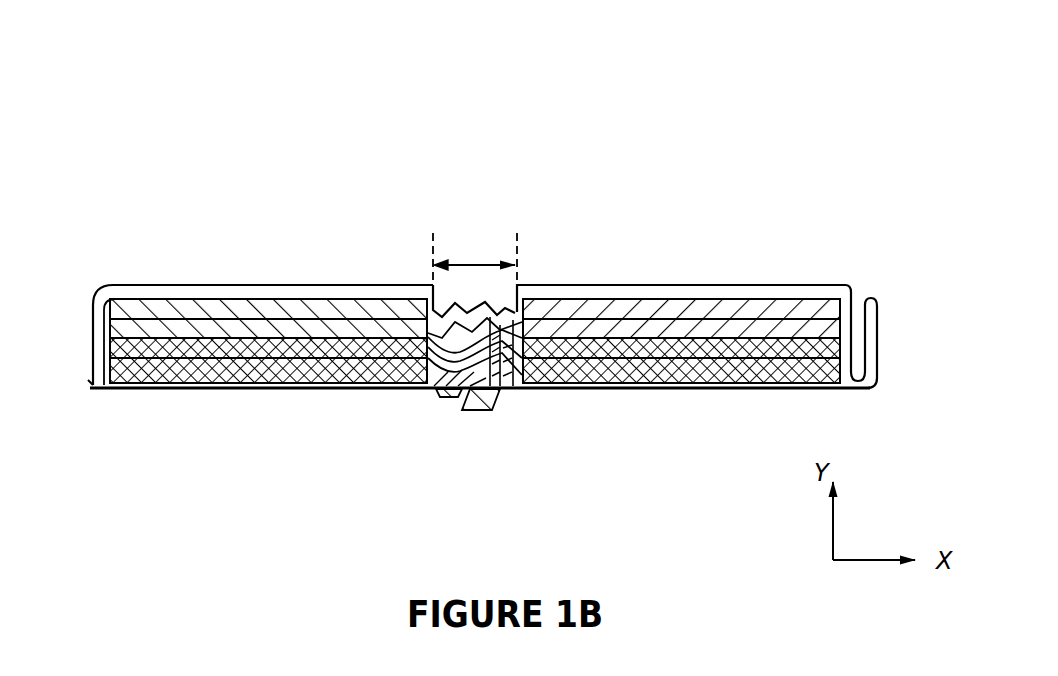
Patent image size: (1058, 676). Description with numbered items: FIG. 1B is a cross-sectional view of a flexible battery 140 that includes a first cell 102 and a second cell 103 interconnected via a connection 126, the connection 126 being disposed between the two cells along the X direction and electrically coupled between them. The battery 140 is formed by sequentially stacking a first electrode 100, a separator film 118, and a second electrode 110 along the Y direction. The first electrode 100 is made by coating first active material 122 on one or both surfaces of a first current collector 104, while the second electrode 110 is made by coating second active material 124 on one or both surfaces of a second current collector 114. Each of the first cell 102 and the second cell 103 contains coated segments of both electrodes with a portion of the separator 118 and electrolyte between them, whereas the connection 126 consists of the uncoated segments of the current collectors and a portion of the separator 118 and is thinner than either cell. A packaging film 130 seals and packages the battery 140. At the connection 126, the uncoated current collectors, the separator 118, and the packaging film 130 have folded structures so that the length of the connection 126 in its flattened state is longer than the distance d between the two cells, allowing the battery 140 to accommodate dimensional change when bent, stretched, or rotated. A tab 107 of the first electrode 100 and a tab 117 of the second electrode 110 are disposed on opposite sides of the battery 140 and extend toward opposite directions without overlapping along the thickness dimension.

The battery 140 is at (504, 63).
The first electrode 100 is at (121, 289).
The second electrode 110 is at (128, 388).
The first cell 102 is at (224, 249).
The second cell 103 is at (714, 247).
The packaging film 130 is at (549, 283).
The first current collector 104 is at (774, 310).
The first active material 122 is at (836, 303).
The separator film 118 is at (836, 333).
The second active material 124 is at (836, 362).
The second current collector 114 is at (611, 367).
The connection 126 is at (468, 211).
The tab 117 is at (449, 394).
The tab 107 is at (487, 403).